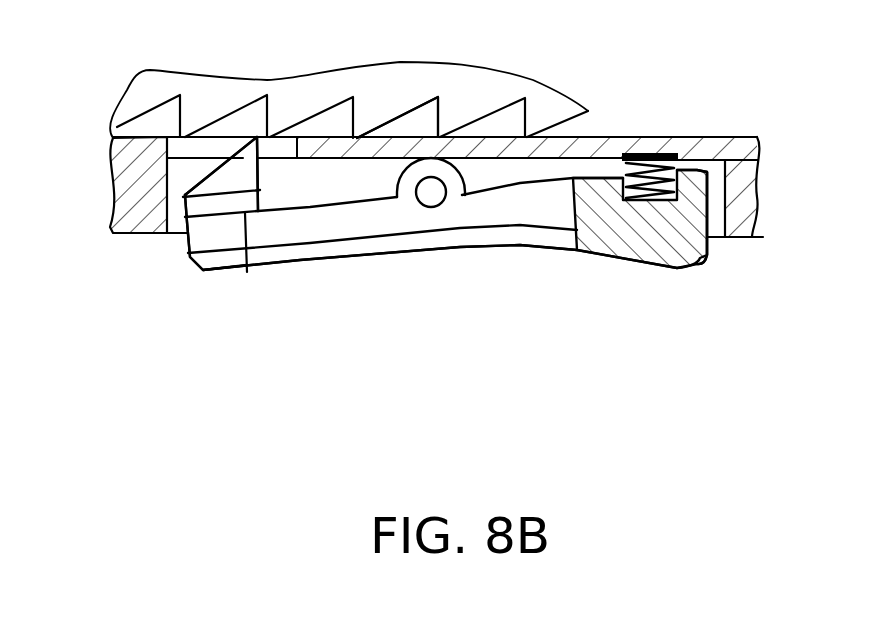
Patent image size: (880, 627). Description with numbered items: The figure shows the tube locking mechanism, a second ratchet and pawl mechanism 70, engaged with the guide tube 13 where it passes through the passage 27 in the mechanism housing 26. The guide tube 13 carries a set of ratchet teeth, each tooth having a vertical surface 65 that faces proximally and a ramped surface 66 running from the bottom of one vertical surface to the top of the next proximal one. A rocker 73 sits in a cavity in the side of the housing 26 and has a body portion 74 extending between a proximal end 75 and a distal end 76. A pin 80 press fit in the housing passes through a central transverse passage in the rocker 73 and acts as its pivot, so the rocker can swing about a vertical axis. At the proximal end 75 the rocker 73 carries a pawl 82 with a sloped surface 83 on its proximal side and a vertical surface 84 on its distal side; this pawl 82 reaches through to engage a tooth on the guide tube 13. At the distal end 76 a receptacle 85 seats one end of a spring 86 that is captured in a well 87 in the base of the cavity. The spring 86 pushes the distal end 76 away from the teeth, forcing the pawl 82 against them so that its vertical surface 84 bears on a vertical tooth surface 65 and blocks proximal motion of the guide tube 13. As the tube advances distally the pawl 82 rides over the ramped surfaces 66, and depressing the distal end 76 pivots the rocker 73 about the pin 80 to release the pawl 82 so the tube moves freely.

The guide tube 13 is at (396, 105).
The mechanism housing 26 is at (133, 202).
The passage 27 is at (152, 123).
The vertical surface 65 is at (453, 114).
The ramped surface 66 is at (409, 116).
The second ratchet and pawl mechanism 70 is at (343, 345).
The rocker 73 is at (512, 210).
The body portion 74 is at (394, 257).
The proximal end 75 is at (202, 232).
The distal end 76 is at (709, 207).
The pin 80 is at (434, 207).
The pawl 82 is at (256, 137).
The sloped surface 83 is at (238, 160).
The vertical surface 84 is at (258, 178).
The receptacle 85 is at (616, 164).
The spring 86 is at (680, 170).
The well 87 is at (640, 160).